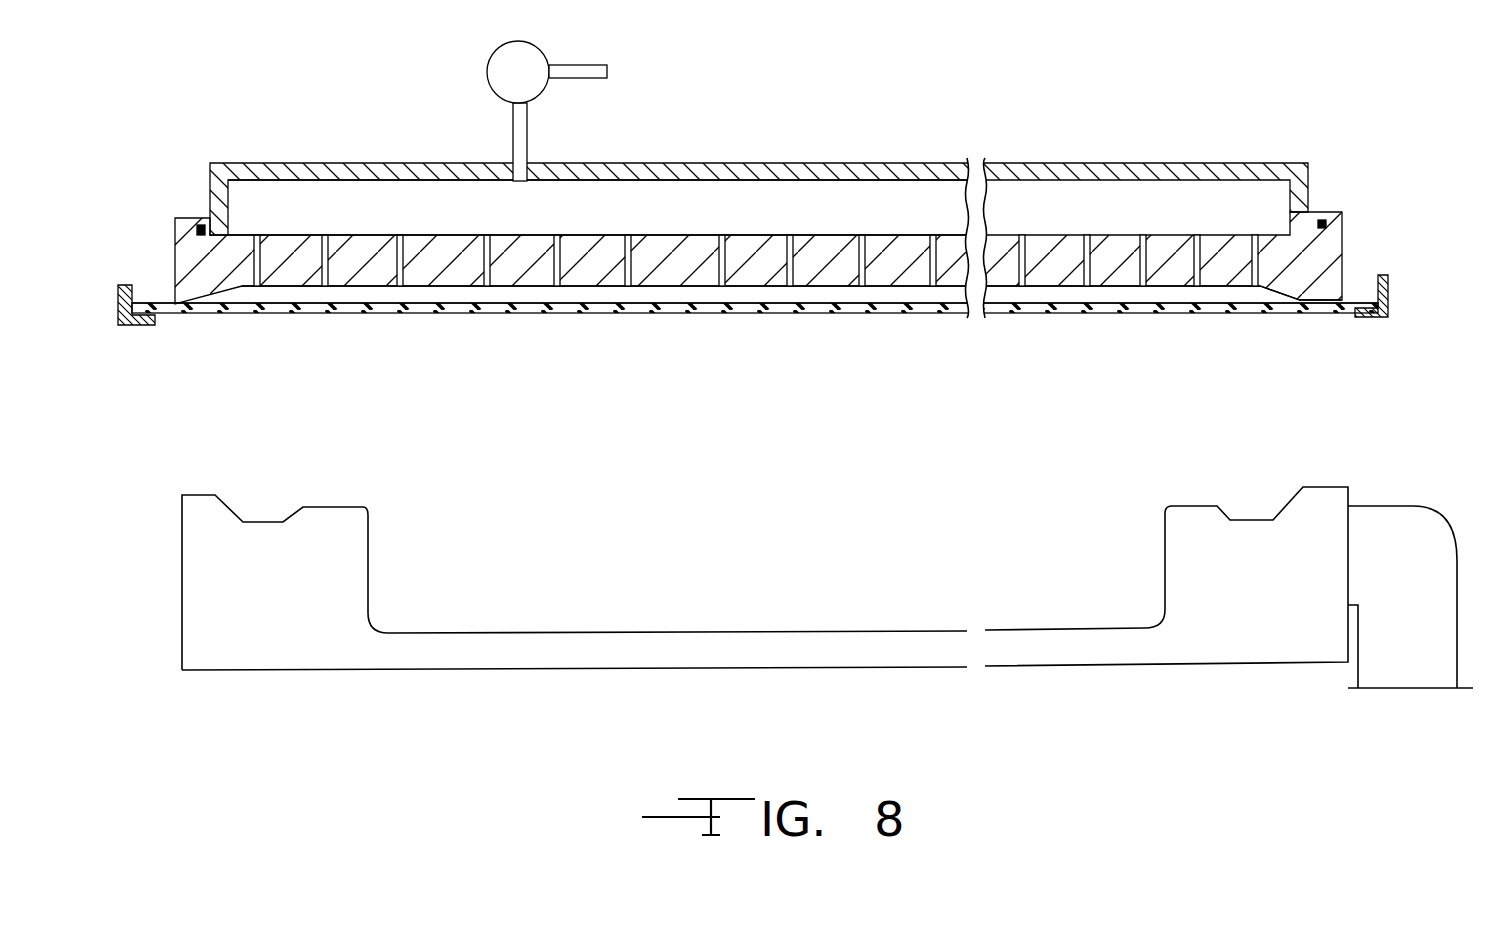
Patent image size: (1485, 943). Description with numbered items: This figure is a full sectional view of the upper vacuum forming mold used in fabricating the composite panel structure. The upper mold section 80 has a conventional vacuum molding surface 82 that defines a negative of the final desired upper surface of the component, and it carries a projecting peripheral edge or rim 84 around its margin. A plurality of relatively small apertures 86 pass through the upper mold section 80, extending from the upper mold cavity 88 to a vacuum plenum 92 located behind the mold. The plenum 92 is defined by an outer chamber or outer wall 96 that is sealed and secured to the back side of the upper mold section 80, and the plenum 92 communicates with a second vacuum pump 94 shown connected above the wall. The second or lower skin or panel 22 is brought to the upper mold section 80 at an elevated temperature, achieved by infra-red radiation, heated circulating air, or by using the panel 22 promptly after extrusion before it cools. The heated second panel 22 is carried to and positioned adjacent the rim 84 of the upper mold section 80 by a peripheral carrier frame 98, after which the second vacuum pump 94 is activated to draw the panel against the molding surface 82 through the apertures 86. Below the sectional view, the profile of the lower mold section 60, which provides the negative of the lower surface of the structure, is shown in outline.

The second panel 22 is at (901, 312).
The lower mold section 60 is at (1107, 665).
The upper mold section 80 is at (1320, 246).
The vacuum molding surface 82 is at (1110, 286).
The projecting peripheral edge or rim 84 is at (1326, 308).
The apertures 86 is at (718, 248).
The upper mold cavity 88 is at (719, 292).
The vacuum plenum 92 is at (842, 221).
The second vacuum pump 94 is at (488, 79).
The outer wall 96 is at (1074, 162).
The peripheral carrier frame 98 is at (127, 283).